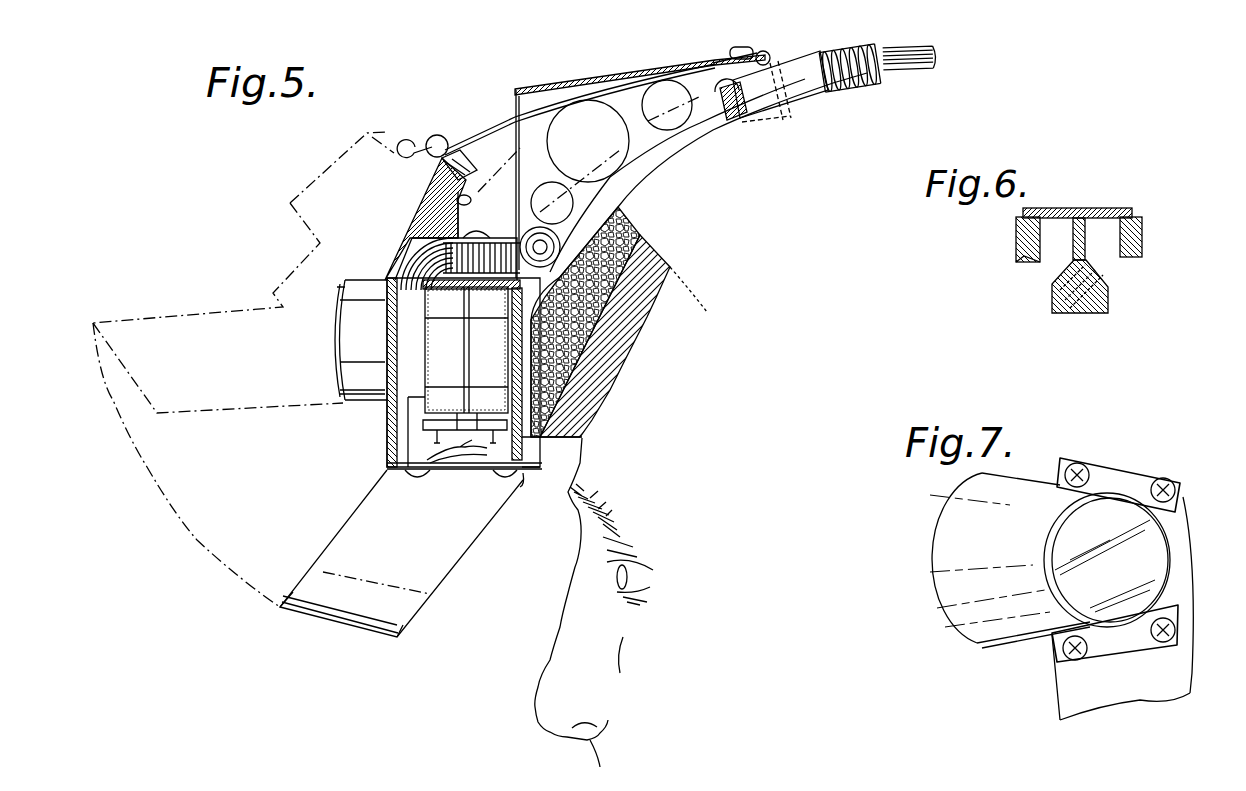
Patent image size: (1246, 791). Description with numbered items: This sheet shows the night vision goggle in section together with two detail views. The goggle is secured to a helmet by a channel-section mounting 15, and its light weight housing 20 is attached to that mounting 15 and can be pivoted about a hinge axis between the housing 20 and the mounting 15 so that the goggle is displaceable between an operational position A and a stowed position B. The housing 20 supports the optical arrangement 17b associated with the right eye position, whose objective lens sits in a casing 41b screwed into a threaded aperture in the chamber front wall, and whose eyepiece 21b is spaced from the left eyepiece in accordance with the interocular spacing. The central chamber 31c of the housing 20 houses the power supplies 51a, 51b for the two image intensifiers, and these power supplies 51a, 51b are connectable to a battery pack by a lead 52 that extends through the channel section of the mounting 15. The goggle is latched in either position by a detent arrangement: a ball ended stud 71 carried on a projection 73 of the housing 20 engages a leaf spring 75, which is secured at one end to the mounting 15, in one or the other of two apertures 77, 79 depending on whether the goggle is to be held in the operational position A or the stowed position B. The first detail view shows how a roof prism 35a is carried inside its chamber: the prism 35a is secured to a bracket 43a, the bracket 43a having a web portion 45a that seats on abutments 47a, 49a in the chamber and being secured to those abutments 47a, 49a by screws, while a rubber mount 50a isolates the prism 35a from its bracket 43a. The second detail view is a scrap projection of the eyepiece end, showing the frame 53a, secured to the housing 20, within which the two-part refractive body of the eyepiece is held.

In FIG. 5, the mounting 15 is at (629, 59).
In FIG. 5, the aperture 79 is at (547, 100).
In FIG. 5, the leaf spring 75 is at (490, 122).
In FIG. 5, the ball ended stud 71 is at (447, 130).
In FIG. 5, the aperture 77 is at (431, 141).
In FIG. 5, the projection 73 is at (456, 200).
In FIG. 5, the casing 41b is at (360, 290).
In FIG. 5, the chamber 31c is at (410, 340).
In FIG. 5, the power supply 51a is at (430, 367).
In FIG. 5, the power supply 51b is at (487, 363).
In FIG. 5, the optical arrangement 17b is at (340, 519).
In FIG. 5, the eyepiece 21b is at (447, 580).
In FIG. 5, the housing 20 is at (520, 447).
In FIG. 7, the housing 20 is at (1162, 670).
In FIG. 5, the lead 52 is at (931, 36).
In FIG. 6, the web portion 45a is at (1057, 212).
In FIG. 6, the abutment 47a is at (1017, 243).
In FIG. 6, the abutment 49a is at (1143, 232).
In FIG. 6, the bracket 43a is at (1088, 245).
In FIG. 6, the rubber mount 50a is at (1052, 293).
In FIG. 6, the roof prism 35a is at (1083, 313).
In FIG. 7, the frame 53a is at (935, 535).
In FIG. 5, the operational position A is at (348, 643).
In FIG. 5, the stowed position B is at (243, 290).